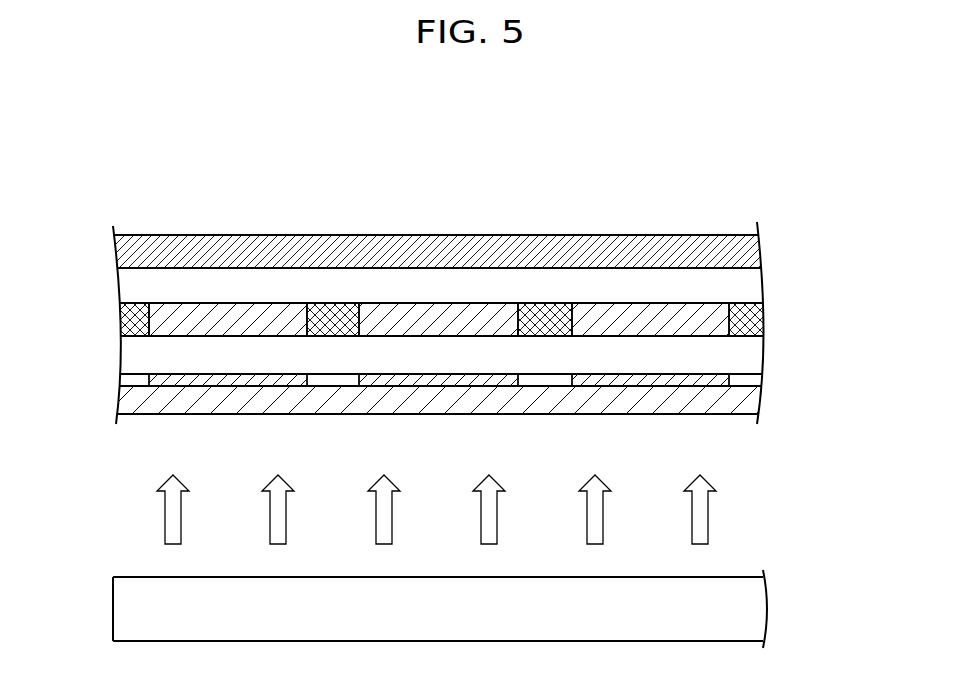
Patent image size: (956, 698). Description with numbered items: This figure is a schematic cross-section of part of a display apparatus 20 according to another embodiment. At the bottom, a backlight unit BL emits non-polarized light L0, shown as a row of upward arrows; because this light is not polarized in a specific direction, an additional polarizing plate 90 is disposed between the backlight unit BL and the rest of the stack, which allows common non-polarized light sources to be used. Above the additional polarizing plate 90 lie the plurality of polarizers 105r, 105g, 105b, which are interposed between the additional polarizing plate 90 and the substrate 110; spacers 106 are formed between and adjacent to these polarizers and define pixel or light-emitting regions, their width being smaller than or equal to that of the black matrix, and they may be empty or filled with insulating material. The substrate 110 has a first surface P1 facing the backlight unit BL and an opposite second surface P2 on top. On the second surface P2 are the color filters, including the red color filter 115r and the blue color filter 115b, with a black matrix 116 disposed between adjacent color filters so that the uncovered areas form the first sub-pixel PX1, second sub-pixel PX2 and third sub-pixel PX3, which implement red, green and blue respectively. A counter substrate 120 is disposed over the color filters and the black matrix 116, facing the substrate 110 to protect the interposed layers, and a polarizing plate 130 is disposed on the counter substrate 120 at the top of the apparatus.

The display apparatus 20 is at (785, 158).
The polarizing plate 130 is at (748, 252).
The counter substrate 120 is at (745, 283).
The black matrix 116 is at (752, 318).
The substrate 110 is at (752, 349).
The spacers 106 is at (752, 378).
The additional polarizing plate 90 is at (750, 405).
The first surface P1 is at (137, 378).
The second surface P2 is at (165, 336).
The first sub-pixel PX1 is at (195, 216).
The second sub-pixel PX2 is at (436, 216).
The third sub-pixel PX3 is at (651, 216).
The polarizer 105r is at (197, 380).
The polarizer 105g is at (415, 380).
The polarizer 105b is at (628, 380).
The red color filter 115r is at (273, 317).
The blue color filter 115b is at (475, 317).
The non-polarized light L0 is at (705, 520).
The backlight unit BL is at (758, 610).